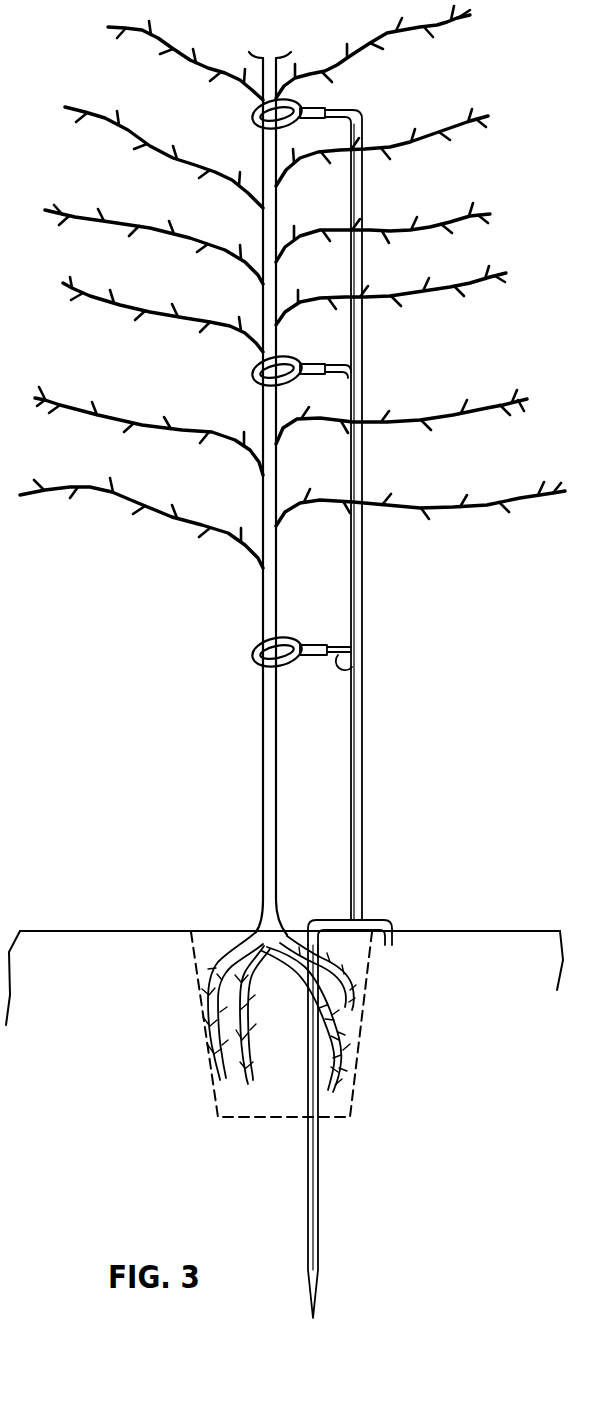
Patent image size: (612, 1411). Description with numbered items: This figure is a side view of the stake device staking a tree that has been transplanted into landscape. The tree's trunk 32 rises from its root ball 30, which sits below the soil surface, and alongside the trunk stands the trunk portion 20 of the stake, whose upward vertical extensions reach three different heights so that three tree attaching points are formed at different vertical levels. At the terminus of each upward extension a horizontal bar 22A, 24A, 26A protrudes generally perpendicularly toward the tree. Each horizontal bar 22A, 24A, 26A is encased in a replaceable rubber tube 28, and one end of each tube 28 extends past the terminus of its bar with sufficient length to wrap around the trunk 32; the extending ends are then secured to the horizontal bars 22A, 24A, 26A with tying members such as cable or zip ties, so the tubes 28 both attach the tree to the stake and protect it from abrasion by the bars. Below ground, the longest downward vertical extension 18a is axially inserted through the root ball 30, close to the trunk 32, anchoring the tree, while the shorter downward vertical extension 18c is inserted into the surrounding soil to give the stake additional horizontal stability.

The downward vertical extension 18a is at (318, 1182).
The downward vertical extension 18c is at (392, 940).
The trunk portion 20 is at (363, 183).
The horizontal bar 22A is at (340, 107).
The horizontal bar 24A is at (346, 363).
The horizontal bar 26A is at (352, 668).
The replaceable rubber tube 28 is at (252, 654).
The root ball 30 is at (354, 1083).
The trunk 32 is at (262, 881).